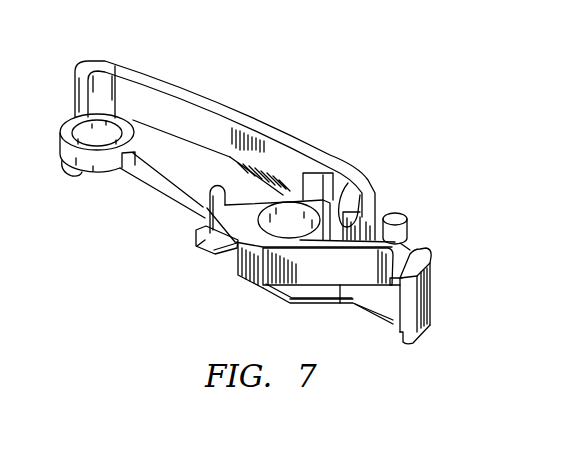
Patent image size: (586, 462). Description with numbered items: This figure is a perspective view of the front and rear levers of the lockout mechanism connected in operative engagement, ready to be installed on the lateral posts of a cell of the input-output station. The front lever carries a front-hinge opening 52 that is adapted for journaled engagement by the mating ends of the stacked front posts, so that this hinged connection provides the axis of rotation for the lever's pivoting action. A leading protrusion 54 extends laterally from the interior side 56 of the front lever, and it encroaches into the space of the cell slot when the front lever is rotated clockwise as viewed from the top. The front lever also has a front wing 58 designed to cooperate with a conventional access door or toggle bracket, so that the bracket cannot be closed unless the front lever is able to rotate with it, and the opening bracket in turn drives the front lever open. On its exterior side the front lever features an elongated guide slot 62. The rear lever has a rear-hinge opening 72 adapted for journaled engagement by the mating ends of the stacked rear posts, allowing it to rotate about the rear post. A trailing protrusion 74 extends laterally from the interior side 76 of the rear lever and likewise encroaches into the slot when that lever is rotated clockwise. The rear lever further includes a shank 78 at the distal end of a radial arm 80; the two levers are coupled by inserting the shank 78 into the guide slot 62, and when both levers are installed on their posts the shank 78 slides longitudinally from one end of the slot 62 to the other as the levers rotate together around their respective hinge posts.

The front-hinge opening 52 is at (294, 208).
The leading protrusion 54 is at (323, 297).
The interior side 56 is at (365, 277).
The front wing 58 is at (414, 345).
The guide slot 62 is at (350, 186).
The rear-hinge opening 72 is at (78, 121).
The trailing protrusion 74 is at (206, 244).
The interior side 76 is at (225, 142).
The shank 78 is at (380, 203).
The radial arm 80 is at (262, 120).